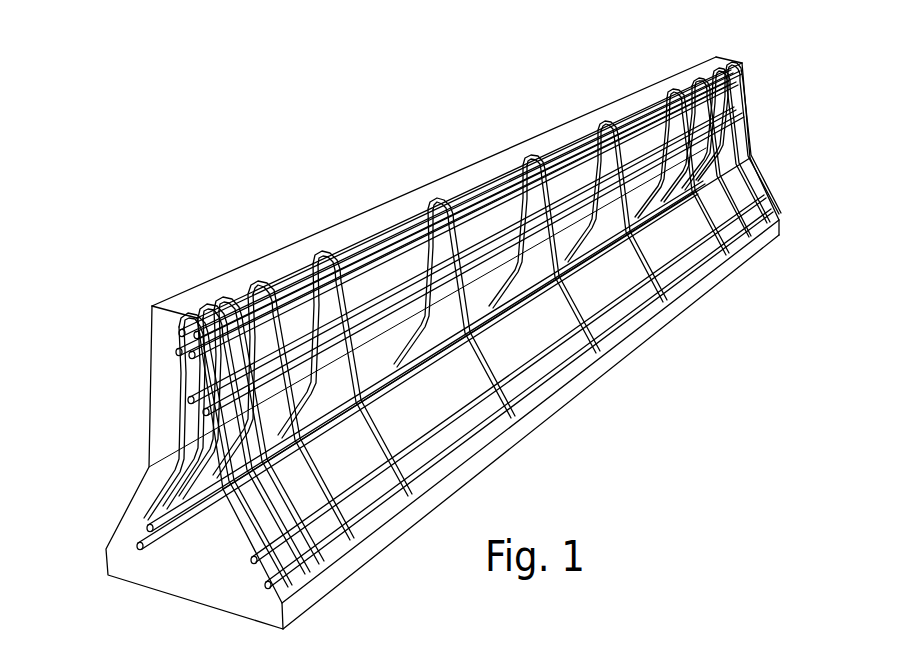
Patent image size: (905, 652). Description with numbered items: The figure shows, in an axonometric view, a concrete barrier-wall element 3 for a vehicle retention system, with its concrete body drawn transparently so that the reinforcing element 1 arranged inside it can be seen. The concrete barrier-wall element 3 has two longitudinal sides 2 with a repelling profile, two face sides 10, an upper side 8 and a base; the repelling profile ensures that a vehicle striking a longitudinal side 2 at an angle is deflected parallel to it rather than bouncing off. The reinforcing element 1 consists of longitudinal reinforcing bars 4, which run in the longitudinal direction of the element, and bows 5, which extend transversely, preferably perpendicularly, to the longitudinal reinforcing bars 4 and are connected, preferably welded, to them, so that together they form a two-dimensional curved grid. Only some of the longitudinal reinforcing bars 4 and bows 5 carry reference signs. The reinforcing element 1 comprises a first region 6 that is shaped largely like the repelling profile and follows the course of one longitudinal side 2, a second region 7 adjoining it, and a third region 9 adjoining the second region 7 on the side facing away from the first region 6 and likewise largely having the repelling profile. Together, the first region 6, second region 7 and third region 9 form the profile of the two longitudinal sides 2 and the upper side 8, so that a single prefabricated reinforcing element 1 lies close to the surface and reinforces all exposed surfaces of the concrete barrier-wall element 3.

The reinforcing element 1 is at (392, 232).
The longitudinal side 2 is at (533, 330).
The concrete barrier-wall element 3 is at (741, 62).
The longitudinal reinforcing bars 4 is at (207, 408).
The bows 5 is at (325, 249).
The first region 6 is at (598, 275).
The second region 7 is at (499, 158).
The upper side 8 is at (640, 97).
The third region 9 is at (153, 473).
The face side 10 is at (200, 587).